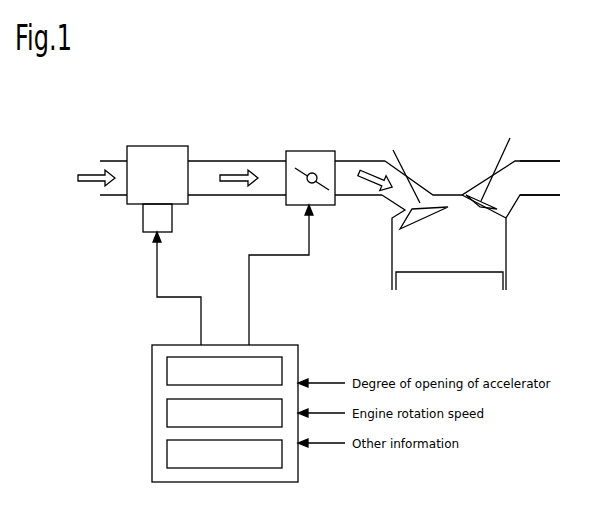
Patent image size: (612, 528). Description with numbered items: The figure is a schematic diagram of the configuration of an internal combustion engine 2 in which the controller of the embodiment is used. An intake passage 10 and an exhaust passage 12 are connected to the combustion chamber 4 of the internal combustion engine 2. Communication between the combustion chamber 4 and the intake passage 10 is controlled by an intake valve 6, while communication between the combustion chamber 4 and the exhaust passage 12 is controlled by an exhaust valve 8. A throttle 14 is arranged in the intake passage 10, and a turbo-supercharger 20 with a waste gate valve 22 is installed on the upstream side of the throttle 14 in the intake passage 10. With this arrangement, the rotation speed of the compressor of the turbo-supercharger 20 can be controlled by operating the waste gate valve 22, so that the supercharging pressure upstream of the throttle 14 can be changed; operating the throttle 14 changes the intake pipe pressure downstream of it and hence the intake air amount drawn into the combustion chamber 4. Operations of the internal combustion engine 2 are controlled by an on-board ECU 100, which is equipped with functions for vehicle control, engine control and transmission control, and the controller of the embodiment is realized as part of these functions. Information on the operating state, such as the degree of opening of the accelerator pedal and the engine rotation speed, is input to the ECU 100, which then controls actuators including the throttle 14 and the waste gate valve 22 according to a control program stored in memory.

The internal combustion engine 2 is at (473, 118).
The combustion chamber 4 is at (418, 253).
The intake valve 6 is at (426, 190).
The exhaust valve 8 is at (492, 206).
The intake passage 10 is at (246, 160).
The exhaust passage 12 is at (543, 160).
The throttle 14 is at (309, 151).
The turbo-supercharger 20 is at (159, 146).
The waste gate valve 22 is at (143, 218).
The ECU 100 is at (274, 345).